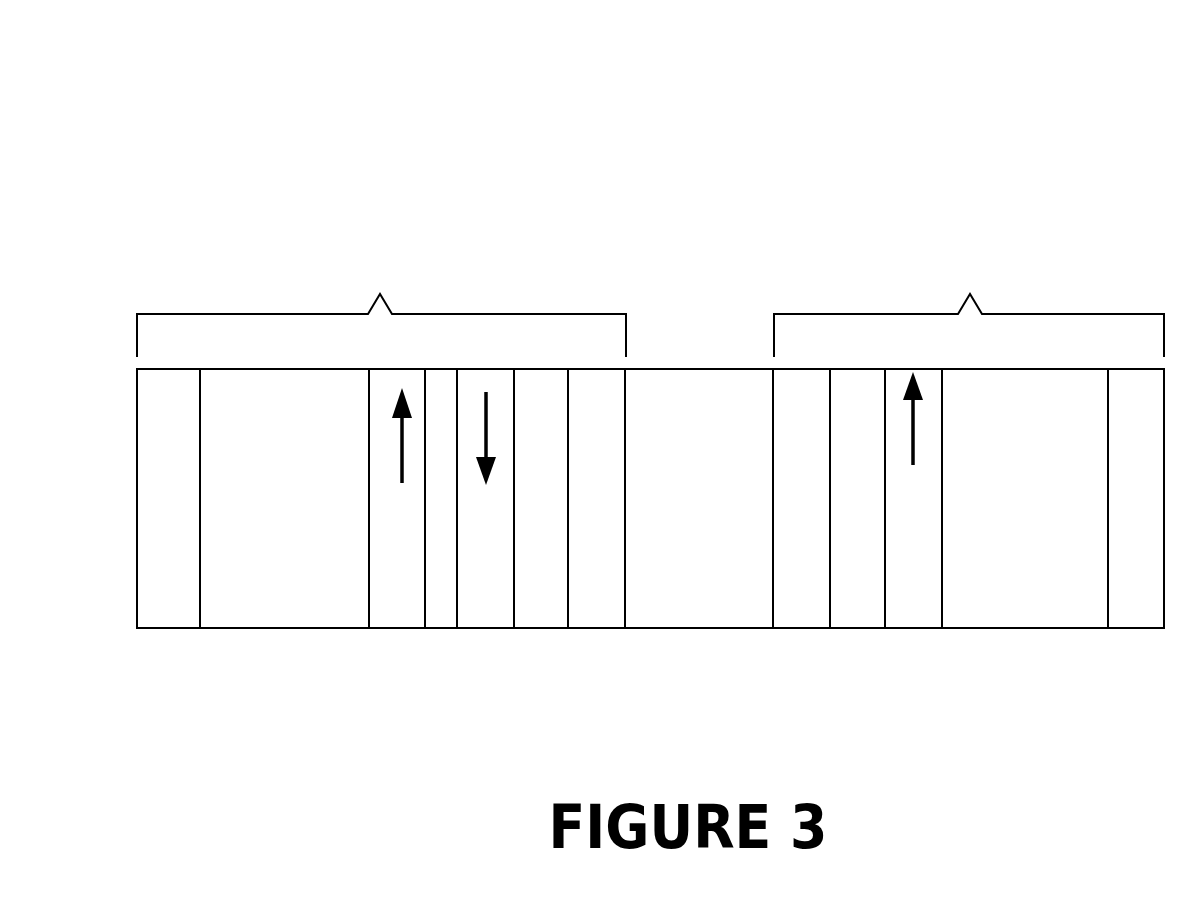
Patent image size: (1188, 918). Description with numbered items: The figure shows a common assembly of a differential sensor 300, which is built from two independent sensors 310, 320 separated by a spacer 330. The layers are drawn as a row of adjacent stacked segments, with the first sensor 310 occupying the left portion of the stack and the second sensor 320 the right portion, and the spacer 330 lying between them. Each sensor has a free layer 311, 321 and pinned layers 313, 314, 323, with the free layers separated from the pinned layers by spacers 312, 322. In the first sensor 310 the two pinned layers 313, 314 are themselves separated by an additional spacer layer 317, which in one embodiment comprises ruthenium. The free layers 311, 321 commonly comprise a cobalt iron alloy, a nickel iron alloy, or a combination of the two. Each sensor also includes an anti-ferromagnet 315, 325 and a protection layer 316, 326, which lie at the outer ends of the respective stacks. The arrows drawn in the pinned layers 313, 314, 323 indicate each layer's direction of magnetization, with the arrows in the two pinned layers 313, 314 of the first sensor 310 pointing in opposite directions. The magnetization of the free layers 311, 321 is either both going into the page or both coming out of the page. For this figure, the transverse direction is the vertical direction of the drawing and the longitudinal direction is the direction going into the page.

The differential sensor 300 is at (35, 49).
The sensor 310 is at (381, 311).
The sensor 320 is at (969, 311).
The free layer 311 is at (575, 606).
The spacer 312 is at (563, 606).
The pinned layer 313 is at (464, 606).
The pinned layer 314 is at (420, 606).
The anti-ferromagnet 315 is at (260, 606).
The protection layer 316 is at (191, 606).
The additional spacer layer 317 is at (440, 383).
The spacer 330 is at (711, 606).
The free layer 321 is at (823, 606).
The spacer 322 is at (879, 606).
The pinned layer 323 is at (935, 606).
The anti-ferromagnet 325 is at (1048, 606).
The protection layer 326 is at (1117, 606).